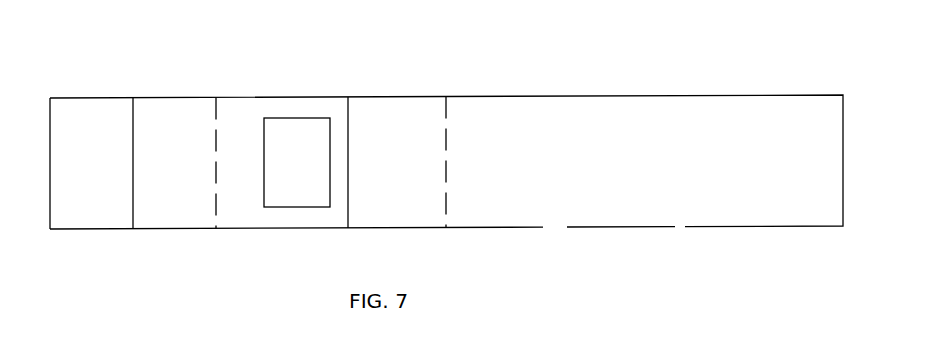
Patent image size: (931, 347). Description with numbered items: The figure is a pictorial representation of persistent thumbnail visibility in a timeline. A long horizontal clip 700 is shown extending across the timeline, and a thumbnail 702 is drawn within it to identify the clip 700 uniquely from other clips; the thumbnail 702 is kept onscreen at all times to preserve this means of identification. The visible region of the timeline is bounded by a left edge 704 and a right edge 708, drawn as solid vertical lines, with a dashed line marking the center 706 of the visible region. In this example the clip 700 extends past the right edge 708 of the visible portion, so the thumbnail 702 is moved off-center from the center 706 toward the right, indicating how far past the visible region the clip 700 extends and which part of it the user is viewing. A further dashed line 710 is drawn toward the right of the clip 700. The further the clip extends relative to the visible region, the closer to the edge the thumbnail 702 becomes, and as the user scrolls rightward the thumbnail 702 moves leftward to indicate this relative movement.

The clip 700 is at (446, 200).
The thumbnail 702 is at (297, 118).
The left edge 704 is at (133, 97).
The center of the visible region 706 is at (216, 97).
The right edge 708 is at (348, 96).
The dashed divider line 710 is at (446, 96).